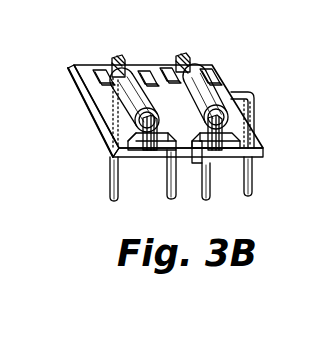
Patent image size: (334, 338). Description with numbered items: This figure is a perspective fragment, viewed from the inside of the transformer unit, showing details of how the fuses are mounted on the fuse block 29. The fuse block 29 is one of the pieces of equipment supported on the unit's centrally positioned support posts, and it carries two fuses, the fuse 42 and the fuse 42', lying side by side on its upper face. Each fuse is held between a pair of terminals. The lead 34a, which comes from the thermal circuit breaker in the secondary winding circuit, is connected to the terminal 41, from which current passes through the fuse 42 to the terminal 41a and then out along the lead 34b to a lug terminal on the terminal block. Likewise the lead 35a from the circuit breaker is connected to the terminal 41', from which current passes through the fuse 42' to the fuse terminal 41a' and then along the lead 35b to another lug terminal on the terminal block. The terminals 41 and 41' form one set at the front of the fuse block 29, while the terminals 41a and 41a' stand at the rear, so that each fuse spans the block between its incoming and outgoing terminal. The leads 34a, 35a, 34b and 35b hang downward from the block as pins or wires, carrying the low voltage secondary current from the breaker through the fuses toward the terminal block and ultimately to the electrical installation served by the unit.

The fuse block 29 is at (263, 147).
The fuse 42' is at (99, 100).
The fuse 42 is at (224, 94).
The fuse terminal 41a' is at (136, 50).
The terminal 41a is at (206, 49).
The terminal 41' is at (149, 151).
The terminal 41 is at (226, 151).
The lead 35b is at (111, 182).
The lead 35a is at (170, 195).
The lead 34a is at (208, 195).
The lead 34b is at (253, 180).